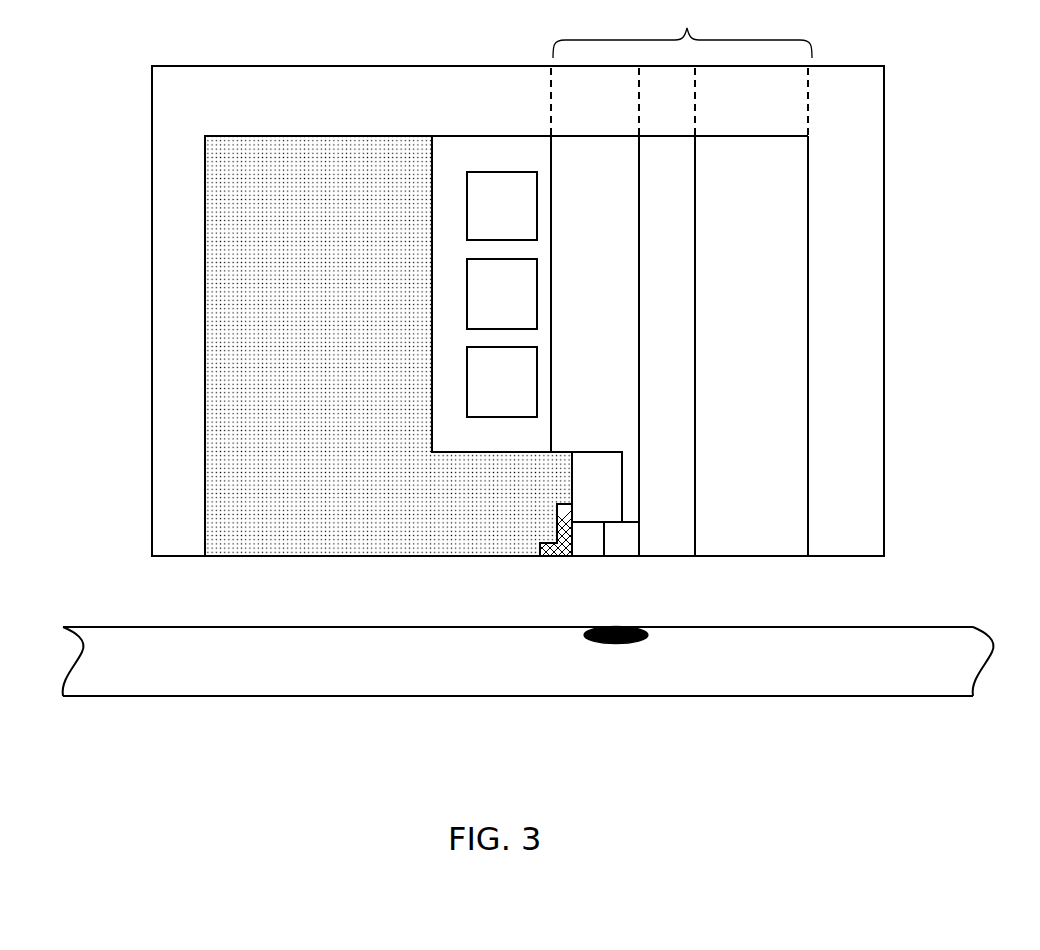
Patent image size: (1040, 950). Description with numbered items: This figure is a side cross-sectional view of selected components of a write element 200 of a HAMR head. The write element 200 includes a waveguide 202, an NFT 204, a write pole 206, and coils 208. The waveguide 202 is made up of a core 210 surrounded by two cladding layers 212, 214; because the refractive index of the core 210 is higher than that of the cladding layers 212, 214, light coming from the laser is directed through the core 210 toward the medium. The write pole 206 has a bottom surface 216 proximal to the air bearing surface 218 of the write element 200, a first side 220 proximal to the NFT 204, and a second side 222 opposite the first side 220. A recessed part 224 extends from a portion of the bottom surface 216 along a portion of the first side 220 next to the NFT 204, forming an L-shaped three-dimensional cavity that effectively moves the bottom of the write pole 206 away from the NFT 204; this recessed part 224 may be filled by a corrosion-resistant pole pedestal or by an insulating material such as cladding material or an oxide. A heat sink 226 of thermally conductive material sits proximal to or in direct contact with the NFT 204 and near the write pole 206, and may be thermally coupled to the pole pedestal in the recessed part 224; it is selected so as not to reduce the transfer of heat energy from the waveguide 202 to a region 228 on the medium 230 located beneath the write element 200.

The write element 200 is at (141, 155).
The waveguide 202 is at (681, 69).
The NFT 204 is at (630, 522).
The write pole 206 is at (302, 136).
The coil 208 is at (537, 198).
The core 210 is at (676, 347).
The cladding layer 212 is at (622, 278).
The cladding layer 214 is at (797, 380).
The bottom surface 216 is at (349, 546).
The air bearing surface 218 is at (185, 557).
The first side 220 is at (561, 477).
The second side 222 is at (214, 410).
The recessed part 224 is at (563, 569).
The heat sink 226 is at (577, 452).
The region 228 is at (617, 626).
The medium 230 is at (960, 627).